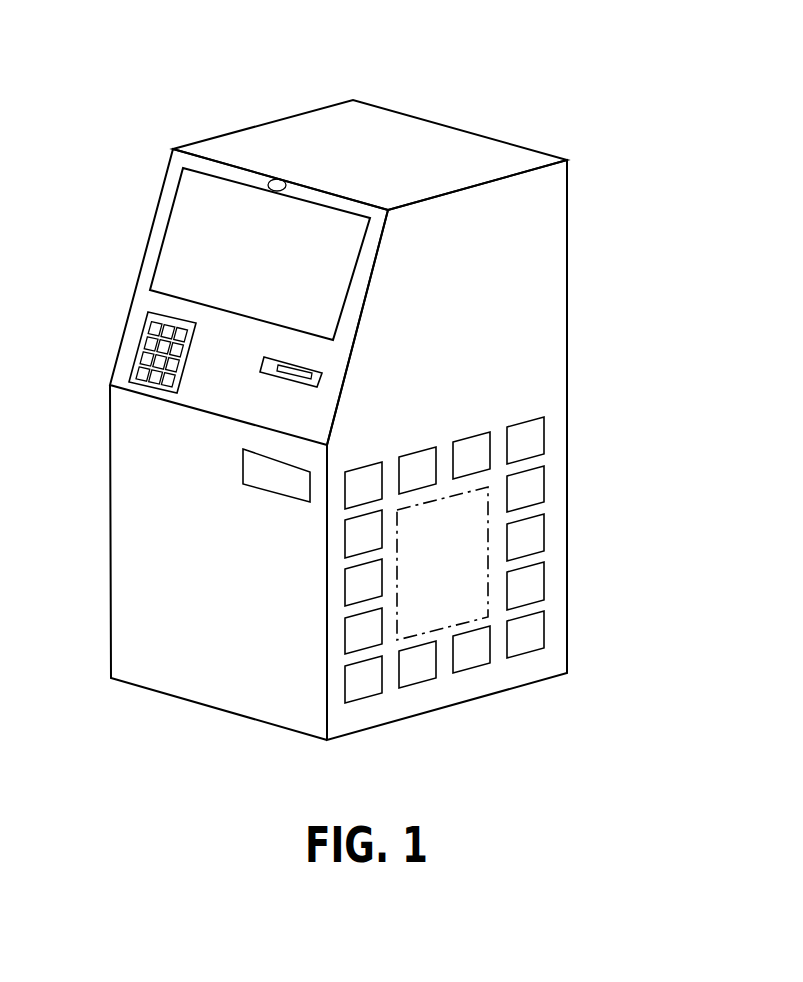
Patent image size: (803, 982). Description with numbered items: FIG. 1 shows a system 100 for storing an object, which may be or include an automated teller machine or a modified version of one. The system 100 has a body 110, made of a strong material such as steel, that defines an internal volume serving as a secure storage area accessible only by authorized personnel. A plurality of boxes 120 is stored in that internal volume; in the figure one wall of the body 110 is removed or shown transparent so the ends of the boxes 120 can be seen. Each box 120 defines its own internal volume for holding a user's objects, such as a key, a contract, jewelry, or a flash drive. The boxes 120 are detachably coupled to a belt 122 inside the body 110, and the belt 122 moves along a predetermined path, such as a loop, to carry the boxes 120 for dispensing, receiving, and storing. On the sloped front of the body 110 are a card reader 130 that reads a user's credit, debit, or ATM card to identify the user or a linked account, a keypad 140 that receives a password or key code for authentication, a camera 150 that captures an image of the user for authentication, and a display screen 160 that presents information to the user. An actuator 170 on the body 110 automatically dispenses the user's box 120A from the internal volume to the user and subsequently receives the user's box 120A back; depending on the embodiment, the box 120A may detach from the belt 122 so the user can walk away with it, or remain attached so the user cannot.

The system for storing an object 100 is at (522, 88).
The body 110 is at (527, 240).
The boxes 120 is at (422, 462).
The user's box 120A is at (542, 487).
The belt 122 is at (488, 545).
The card reader 130 is at (310, 368).
The keypad 140 is at (148, 360).
The camera 150 is at (276, 179).
The display screen 160 is at (192, 243).
The actuator 170 is at (257, 470).